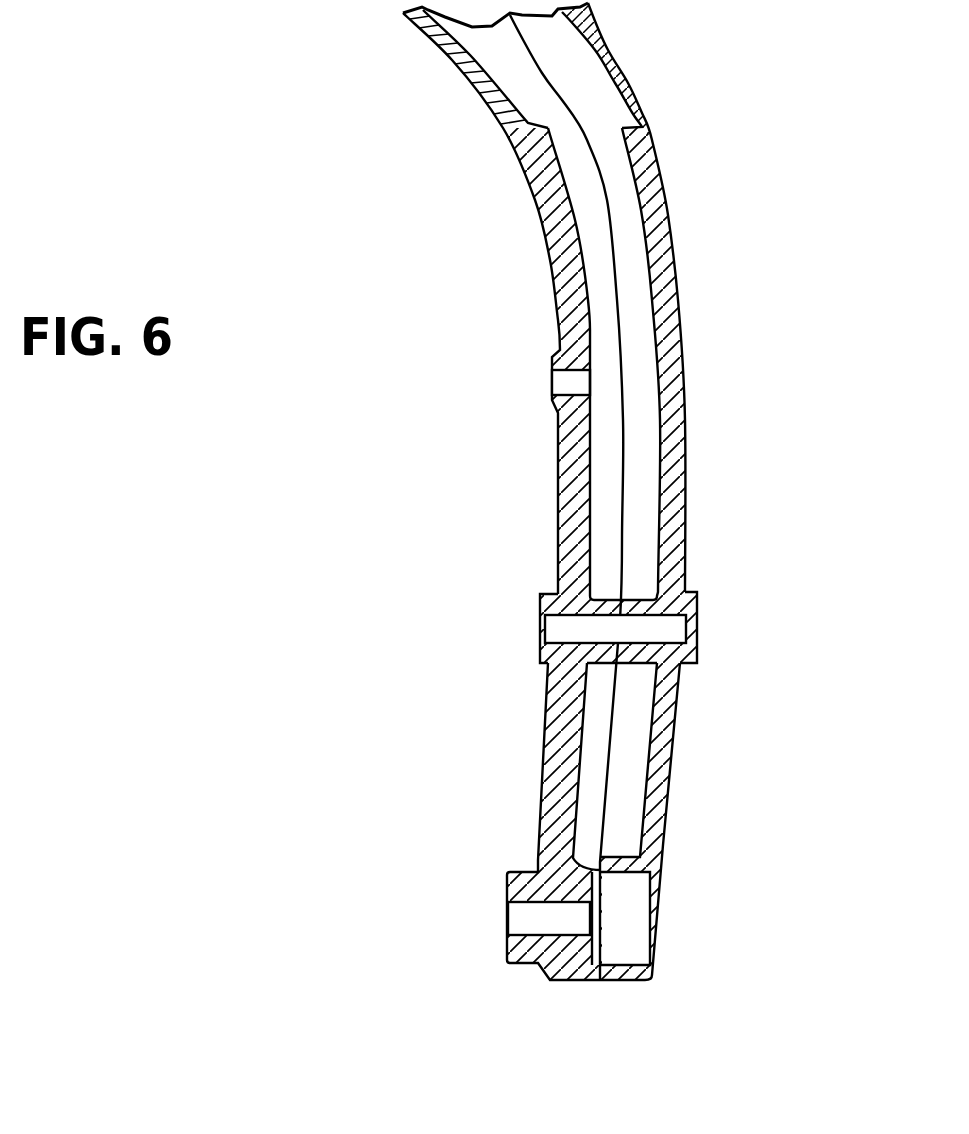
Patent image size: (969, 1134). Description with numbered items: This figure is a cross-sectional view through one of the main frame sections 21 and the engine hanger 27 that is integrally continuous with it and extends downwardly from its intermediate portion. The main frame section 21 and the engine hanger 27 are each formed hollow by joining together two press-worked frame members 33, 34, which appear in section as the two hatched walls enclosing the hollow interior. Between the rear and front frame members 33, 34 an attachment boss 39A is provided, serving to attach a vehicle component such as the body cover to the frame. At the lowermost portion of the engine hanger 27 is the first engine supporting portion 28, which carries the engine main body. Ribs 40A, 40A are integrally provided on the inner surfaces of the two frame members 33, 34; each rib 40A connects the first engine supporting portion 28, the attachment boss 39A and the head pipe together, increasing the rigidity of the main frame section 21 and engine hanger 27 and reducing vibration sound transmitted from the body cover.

The main frame section 21 is at (640, 490).
The frame member 33 is at (575, 207).
The frame member 34 is at (803, 138).
The rib 40A is at (593, 318).
The attachment boss 39A is at (540, 605).
The engine hanger 27 is at (545, 727).
The first engine supporting portion 28 is at (580, 977).